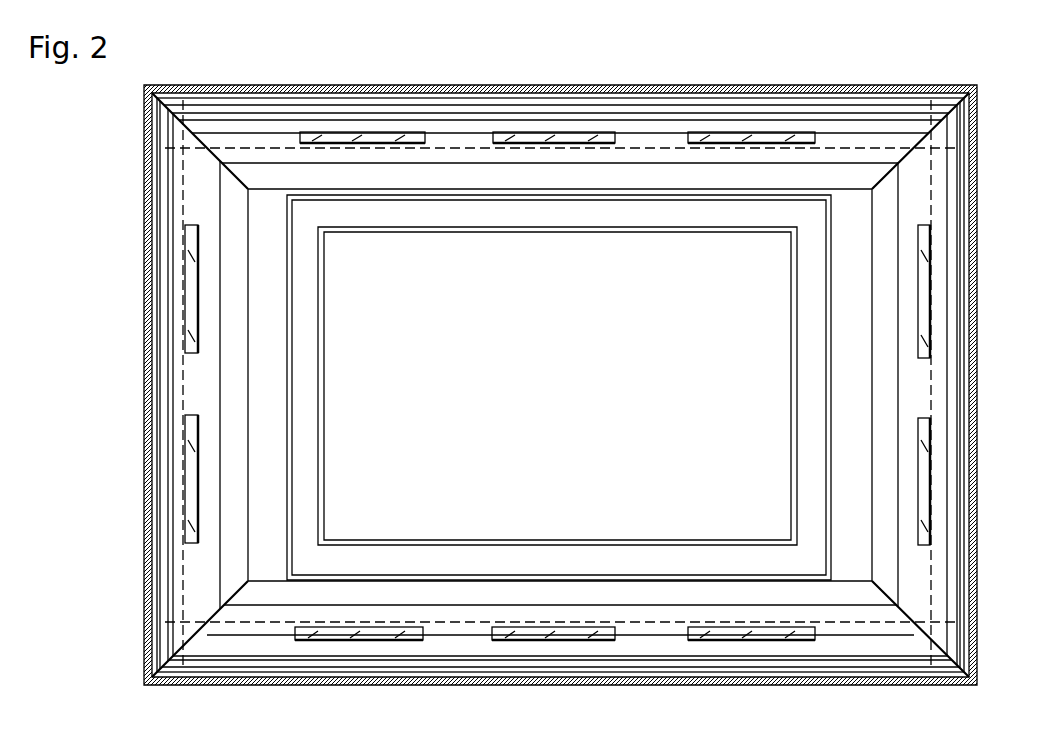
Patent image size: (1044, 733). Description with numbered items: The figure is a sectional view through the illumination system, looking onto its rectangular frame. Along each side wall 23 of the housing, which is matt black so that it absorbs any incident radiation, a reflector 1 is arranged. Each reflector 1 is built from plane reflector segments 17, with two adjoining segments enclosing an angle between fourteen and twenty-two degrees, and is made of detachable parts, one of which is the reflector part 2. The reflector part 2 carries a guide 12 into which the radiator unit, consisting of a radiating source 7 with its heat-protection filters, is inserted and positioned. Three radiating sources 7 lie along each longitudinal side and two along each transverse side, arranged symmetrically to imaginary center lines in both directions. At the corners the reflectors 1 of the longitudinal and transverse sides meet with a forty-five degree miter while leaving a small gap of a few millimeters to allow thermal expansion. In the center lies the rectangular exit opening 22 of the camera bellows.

The reflector 1 is at (241, 86).
The reflector part 2 is at (281, 125).
The radiating source 7 is at (190, 300).
The guide 12 is at (472, 120).
The reflector segment 17 is at (478, 127).
The exit opening 22 is at (570, 364).
The side wall 23 is at (645, 92).